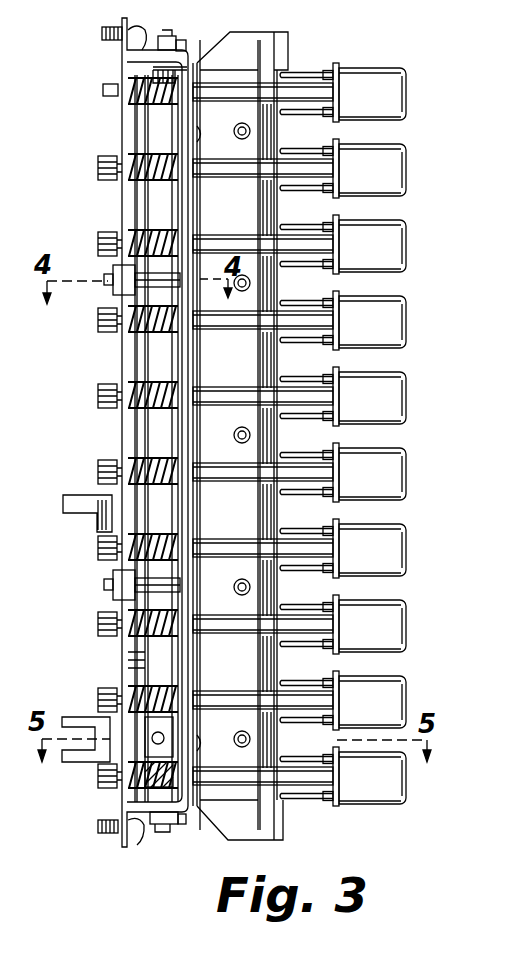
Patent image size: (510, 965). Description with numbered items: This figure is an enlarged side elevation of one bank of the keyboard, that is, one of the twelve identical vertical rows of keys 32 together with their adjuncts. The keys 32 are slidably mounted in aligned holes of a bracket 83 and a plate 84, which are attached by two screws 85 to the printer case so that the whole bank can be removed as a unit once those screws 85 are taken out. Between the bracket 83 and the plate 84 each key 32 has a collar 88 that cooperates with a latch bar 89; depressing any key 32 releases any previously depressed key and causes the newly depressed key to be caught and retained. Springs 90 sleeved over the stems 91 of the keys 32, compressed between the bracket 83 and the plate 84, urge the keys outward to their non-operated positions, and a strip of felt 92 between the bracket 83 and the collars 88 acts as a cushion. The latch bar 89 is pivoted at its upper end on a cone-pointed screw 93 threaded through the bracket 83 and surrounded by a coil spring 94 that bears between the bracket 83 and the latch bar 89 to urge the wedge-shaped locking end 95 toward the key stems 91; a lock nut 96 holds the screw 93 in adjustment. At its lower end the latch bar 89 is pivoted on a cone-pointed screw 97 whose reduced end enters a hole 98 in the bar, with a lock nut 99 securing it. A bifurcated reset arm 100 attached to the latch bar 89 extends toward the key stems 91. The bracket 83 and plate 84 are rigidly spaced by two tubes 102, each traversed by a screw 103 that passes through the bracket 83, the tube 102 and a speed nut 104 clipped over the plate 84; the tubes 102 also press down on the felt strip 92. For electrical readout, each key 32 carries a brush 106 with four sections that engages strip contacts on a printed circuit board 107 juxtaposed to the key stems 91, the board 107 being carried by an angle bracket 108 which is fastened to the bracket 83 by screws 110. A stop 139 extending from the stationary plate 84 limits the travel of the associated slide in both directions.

The key 32 is at (400, 120).
The bracket 83 is at (138, 27).
The plate 84 is at (123, 62).
The screw 85 is at (140, 838).
The collar 88 is at (177, 452).
The latch bar 89 is at (157, 673).
The spring 90 is at (150, 228).
The stem 91 is at (110, 158).
The strip of felt 92 is at (174, 128).
The cone-pointed screw 93 is at (168, 30).
The coil spring 94 is at (160, 74).
The locking end 95 is at (157, 662).
The lock nut 96 is at (184, 55).
The cone-pointed screw 97 is at (160, 832).
The hole 98 is at (173, 768).
The lock nut 99 is at (186, 818).
The bifurcated reset arm 100 is at (92, 712).
The tube 102 is at (168, 278).
The screw 103 is at (110, 274).
The speed nut 104 is at (118, 288).
The brush 106 is at (293, 109).
The printed circuit board 107 is at (283, 38).
The angle bracket 108 is at (222, 76).
The screw 110 is at (200, 130).
The stop 139 is at (92, 504).